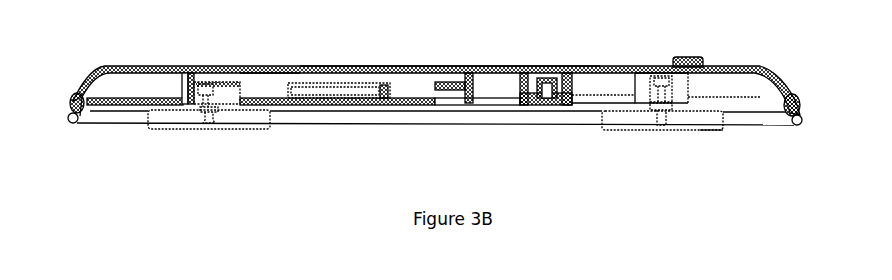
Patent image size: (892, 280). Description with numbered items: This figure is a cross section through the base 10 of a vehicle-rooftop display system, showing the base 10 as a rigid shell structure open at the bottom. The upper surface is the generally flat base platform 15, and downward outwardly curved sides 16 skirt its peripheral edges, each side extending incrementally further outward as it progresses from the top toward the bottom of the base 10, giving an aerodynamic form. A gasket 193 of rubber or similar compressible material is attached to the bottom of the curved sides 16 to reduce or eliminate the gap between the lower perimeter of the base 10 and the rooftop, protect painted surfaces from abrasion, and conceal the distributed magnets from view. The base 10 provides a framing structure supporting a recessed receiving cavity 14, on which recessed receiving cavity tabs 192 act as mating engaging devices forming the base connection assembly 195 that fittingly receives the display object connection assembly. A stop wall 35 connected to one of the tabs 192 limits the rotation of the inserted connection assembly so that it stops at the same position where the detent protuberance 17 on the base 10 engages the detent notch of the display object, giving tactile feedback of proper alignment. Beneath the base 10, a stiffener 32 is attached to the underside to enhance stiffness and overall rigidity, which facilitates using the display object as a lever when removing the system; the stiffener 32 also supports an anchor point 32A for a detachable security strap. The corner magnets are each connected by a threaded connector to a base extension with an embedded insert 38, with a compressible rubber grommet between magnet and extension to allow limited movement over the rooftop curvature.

The base 10 is at (82, 64).
The recessed receiving cavity 14 is at (270, 85).
The flat base platform 15 is at (587, 67).
The downward outwardly curved sides 16 is at (777, 83).
The detent protuberance 17 is at (682, 60).
The stiffener 32 is at (582, 108).
The anchor point 32A is at (543, 102).
The stop wall 35 is at (377, 103).
The embedded insert 38 is at (722, 130).
The recessed receiving cavity tabs 192 is at (337, 88).
The gasket 193 is at (110, 117).
The base connection assembly 195 is at (446, 62).